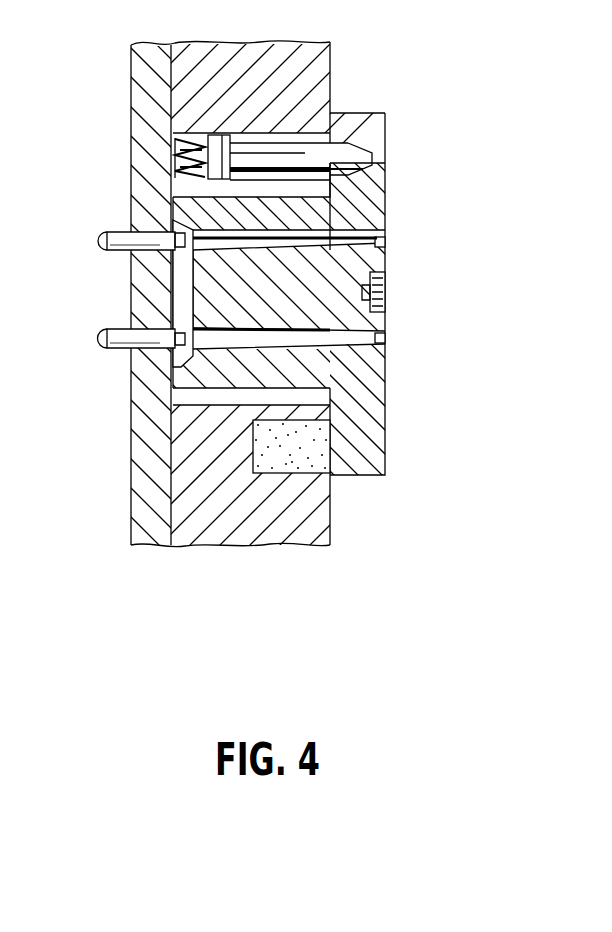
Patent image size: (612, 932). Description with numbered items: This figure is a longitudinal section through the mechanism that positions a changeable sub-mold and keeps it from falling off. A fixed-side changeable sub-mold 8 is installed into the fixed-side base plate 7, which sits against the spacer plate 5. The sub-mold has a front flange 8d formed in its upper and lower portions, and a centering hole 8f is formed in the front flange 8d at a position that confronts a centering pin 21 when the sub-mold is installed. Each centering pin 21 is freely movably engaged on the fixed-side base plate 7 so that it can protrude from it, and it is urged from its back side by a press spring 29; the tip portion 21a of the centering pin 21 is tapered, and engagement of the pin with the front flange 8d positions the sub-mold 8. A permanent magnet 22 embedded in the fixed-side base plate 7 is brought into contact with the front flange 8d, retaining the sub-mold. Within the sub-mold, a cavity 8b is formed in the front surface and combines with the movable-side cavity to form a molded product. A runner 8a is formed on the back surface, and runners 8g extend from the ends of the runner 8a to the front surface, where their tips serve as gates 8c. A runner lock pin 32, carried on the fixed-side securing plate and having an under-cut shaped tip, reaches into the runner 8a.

The spacer plate 5 is at (152, 546).
The fixed-side base plate 7 is at (245, 546).
The fixed-side changeable sub-mold 8 is at (385, 212).
The runner 8a is at (182, 283).
The cavity 8b is at (385, 293).
The gate 8c is at (385, 343).
The front flange 8d is at (385, 133).
The centering hole 8f is at (385, 155).
The runner 8g is at (266, 243).
The centering pin 21 is at (342, 148).
The tip portion 21a is at (385, 122).
The permanent magnet 22 is at (297, 462).
The press spring 29 is at (200, 135).
The runner lock pin 32 is at (120, 235).